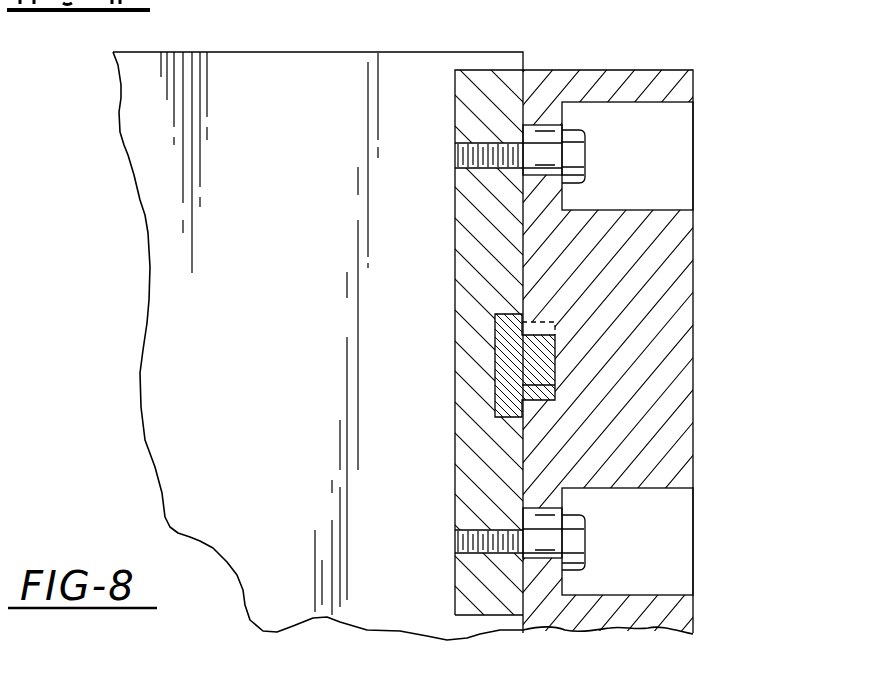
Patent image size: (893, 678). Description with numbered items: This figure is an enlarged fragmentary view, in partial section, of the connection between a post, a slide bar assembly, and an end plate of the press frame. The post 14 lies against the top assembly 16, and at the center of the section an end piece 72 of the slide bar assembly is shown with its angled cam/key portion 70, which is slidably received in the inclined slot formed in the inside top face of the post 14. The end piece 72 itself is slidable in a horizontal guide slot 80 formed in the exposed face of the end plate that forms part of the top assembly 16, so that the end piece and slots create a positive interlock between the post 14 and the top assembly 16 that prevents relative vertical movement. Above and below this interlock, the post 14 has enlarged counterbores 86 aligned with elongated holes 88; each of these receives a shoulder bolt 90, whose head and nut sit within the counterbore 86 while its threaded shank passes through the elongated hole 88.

The post 14 is at (718, 273).
The top assembly 16 is at (466, 30).
The angled cam/key portion 70 is at (560, 351).
The end piece 72 is at (583, 424).
The slot 80 is at (506, 413).
The enlarged counterbore 86 is at (672, 90).
The elongated hole 88 is at (547, 188).
The shoulder bolt 90 is at (583, 107).